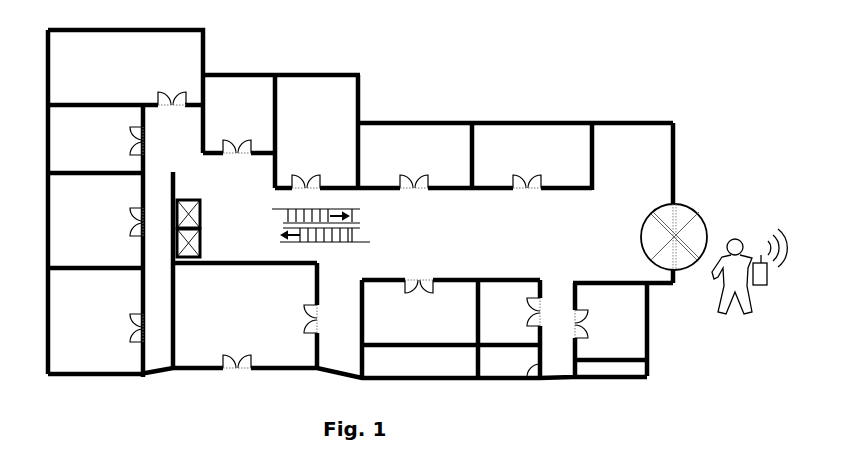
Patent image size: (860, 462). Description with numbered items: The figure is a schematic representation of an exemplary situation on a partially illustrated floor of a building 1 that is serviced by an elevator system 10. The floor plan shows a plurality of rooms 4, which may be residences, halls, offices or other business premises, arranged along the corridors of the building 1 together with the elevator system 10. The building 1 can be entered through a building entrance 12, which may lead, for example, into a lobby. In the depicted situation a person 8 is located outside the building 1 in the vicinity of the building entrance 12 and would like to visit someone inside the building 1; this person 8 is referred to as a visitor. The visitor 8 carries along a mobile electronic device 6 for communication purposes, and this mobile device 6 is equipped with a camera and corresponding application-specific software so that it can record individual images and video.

The building 1 is at (522, 122).
The rooms 4 is at (222, 290).
The mobile electronic device 6 is at (767, 272).
The person 8 is at (743, 250).
The elevator system 10 is at (200, 212).
The building entrance 12 is at (688, 203).